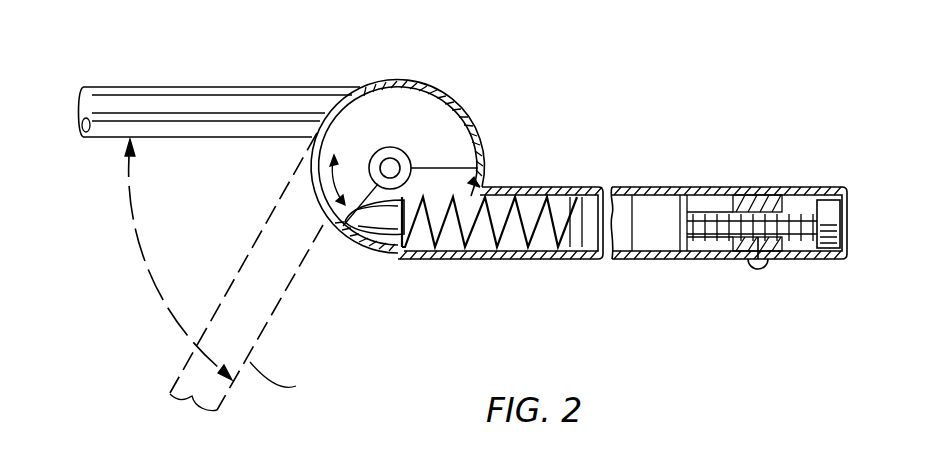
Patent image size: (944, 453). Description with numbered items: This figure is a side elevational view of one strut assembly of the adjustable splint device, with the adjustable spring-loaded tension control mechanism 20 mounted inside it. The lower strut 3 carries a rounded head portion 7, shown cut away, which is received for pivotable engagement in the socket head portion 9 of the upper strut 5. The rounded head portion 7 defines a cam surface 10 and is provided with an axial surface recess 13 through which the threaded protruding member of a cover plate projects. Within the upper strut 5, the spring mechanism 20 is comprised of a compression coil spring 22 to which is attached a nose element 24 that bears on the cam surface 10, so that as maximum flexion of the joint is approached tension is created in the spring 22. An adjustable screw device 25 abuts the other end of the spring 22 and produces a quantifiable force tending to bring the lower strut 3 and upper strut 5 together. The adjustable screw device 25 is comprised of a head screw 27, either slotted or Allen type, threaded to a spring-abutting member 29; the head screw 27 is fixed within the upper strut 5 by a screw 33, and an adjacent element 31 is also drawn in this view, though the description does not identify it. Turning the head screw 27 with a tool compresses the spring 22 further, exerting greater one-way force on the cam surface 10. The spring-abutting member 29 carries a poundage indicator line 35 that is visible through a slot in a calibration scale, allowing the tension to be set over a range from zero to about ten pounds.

The lower strut 3 is at (229, 92).
The upper strut 5 is at (552, 187).
The rounded head portion 7 is at (363, 124).
The socket head portion 9 is at (462, 108).
The cam surface 10 is at (350, 246).
The axial surface recess 13 is at (396, 153).
The adjustable spring-loaded tension control mechanism 20 is at (584, 274).
The spring 22 is at (518, 262).
The nose element 24 is at (368, 250).
The adjustable screw device 25 is at (798, 203).
The head screw 27 is at (724, 257).
The spring-abutting member 29 is at (650, 253).
The nut block 31 is at (742, 195).
The screw 33 is at (766, 266).
The poundage indicator line 35 is at (638, 200).